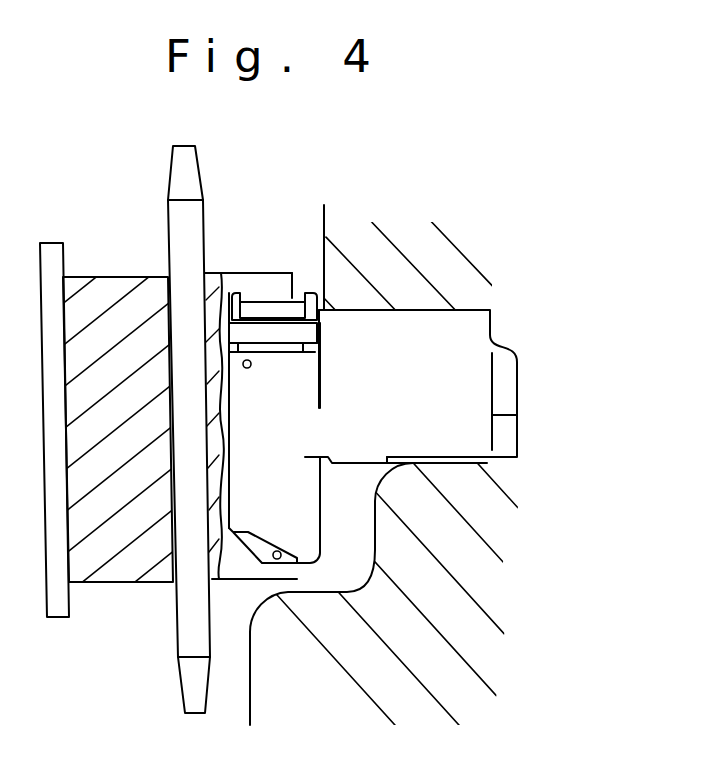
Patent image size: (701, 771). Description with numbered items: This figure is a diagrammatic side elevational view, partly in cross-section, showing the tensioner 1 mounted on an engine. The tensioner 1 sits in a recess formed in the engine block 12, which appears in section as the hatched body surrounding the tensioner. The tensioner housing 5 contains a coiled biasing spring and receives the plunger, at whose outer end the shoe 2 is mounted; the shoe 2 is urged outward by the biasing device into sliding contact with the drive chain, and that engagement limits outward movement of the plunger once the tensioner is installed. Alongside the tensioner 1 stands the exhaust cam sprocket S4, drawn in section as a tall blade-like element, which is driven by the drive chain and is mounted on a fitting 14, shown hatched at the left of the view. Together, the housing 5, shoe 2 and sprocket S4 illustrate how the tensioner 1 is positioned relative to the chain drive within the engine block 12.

The tensioner 1 is at (480, 340).
The shoe 2 is at (265, 307).
The tensioner housing 5 is at (298, 518).
The engine block 12 is at (395, 253).
The fitting 14 is at (102, 292).
The exhaust cam sprocket S4 is at (193, 217).